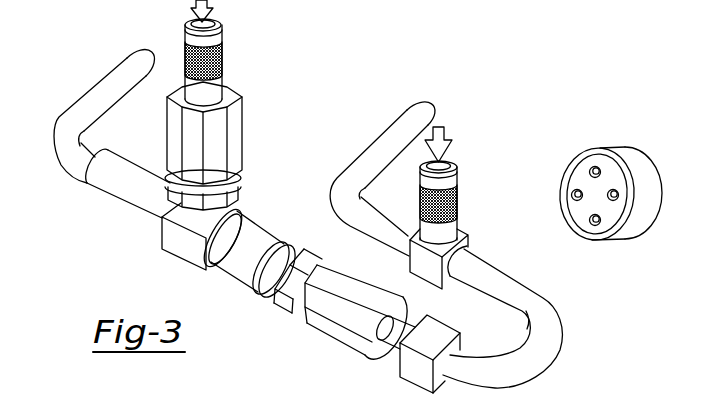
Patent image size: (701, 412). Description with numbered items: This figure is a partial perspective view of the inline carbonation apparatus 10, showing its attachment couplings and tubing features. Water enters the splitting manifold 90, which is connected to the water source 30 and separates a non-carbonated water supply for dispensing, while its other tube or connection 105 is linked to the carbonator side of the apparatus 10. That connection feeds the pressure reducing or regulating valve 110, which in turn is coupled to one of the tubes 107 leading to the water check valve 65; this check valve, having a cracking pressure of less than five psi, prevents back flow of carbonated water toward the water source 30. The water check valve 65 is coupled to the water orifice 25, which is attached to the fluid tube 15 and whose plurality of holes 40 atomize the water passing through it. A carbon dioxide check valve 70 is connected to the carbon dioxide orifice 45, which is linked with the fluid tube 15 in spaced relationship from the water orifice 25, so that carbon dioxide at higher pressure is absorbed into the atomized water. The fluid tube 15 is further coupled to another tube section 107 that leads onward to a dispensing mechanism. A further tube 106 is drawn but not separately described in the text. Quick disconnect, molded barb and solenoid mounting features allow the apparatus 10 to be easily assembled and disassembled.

The inline carbonation apparatus 10 is at (309, 299).
The fluid tube 15 is at (245, 280).
The water orifice 25 is at (290, 316).
The water source 30 is at (444, 140).
The holes 40 is at (589, 170).
The carbon dioxide orifice 45 is at (238, 217).
The water check valve 65 is at (354, 353).
The carbon dioxide check valve 70 is at (242, 118).
The splitting manifold 90 is at (468, 241).
The tube or connection 105 is at (546, 300).
The conduit 106 is at (392, 126).
The connections or tubes 107 is at (316, 222).
The pressure reducing or regulating valve 110 is at (437, 327).